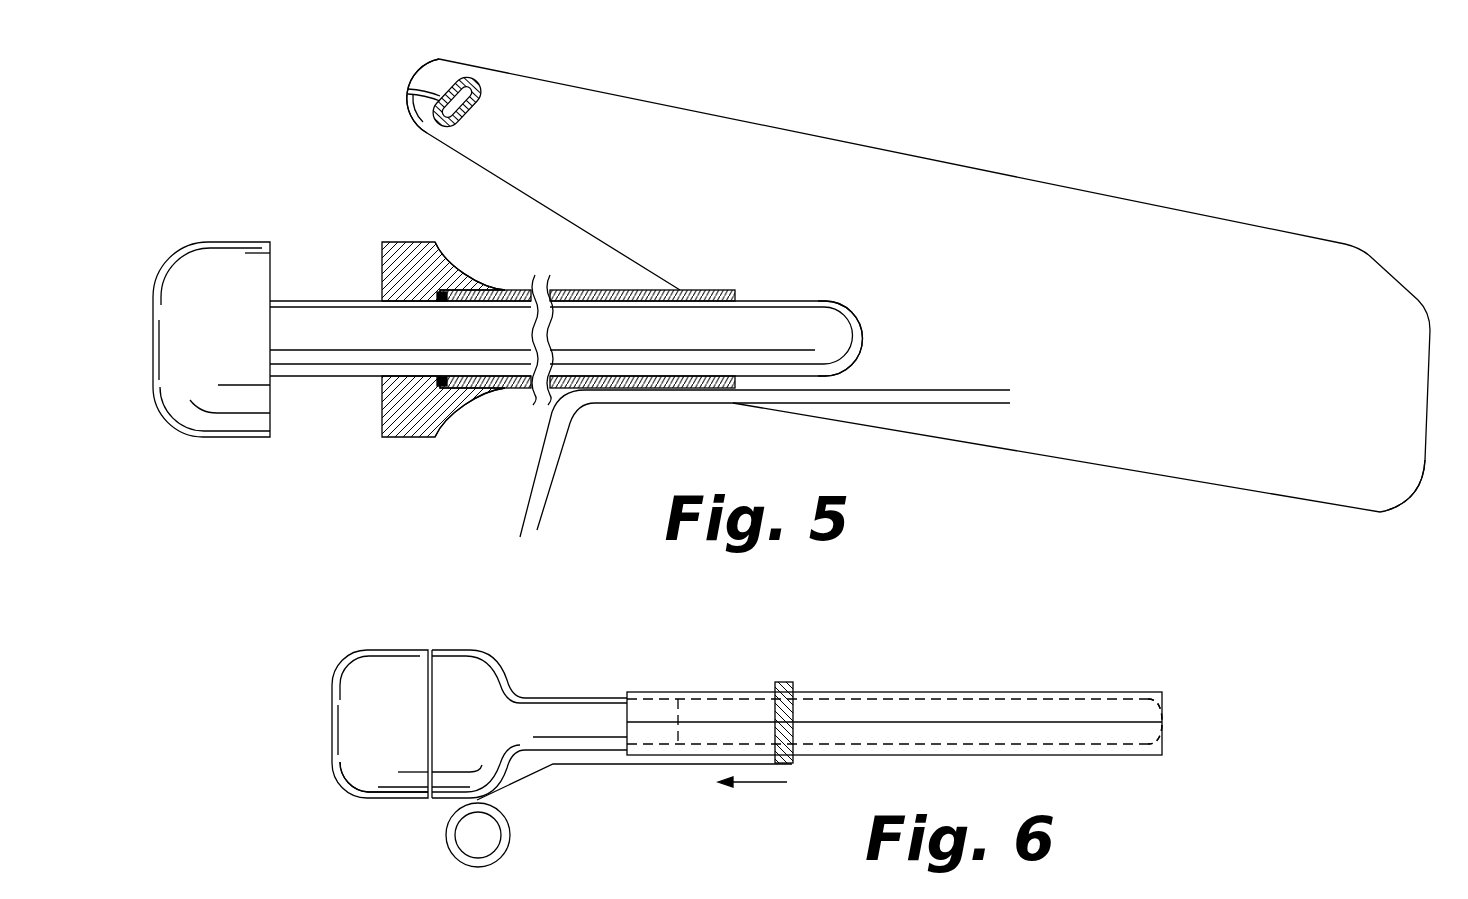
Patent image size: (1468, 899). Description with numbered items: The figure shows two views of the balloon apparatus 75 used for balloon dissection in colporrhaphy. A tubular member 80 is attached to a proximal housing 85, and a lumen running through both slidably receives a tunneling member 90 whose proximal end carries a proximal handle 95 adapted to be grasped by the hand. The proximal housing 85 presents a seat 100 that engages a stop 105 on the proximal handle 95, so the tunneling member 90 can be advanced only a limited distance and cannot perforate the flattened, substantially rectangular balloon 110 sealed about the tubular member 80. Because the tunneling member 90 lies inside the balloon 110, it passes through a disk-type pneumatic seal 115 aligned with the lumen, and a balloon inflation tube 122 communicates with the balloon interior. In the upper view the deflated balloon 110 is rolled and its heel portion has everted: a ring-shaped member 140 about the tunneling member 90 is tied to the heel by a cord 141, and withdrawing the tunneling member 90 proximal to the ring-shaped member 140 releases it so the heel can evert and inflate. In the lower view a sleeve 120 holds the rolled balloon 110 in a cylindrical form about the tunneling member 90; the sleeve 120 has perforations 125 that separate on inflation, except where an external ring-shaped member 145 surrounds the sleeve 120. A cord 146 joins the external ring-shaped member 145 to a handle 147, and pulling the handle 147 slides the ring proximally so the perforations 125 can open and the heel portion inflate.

In FIG. 6, the balloon apparatus 75 is at (395, 650).
In FIG. 5, the tubular member 80 is at (607, 290).
In FIG. 6, the tubular member 80 is at (572, 698).
In FIG. 5, the proximal housing 85 is at (468, 277).
In FIG. 6, the proximal housing 85 is at (473, 650).
In FIG. 5, the tunneling member 90 is at (805, 301).
In FIG. 6, the tunneling member 90 is at (1155, 758).
In FIG. 5, the proximal handle 95 is at (212, 437).
In FIG. 6, the proximal handle 95 is at (375, 790).
In FIG. 5, the seat 100 is at (1188, 210).
In FIG. 5, the stop 105 is at (272, 418).
In FIG. 5, the balloon 110 is at (1423, 472).
In FIG. 5, the pneumatic seal 115 is at (480, 67).
In FIG. 6, the sleeve 120 is at (923, 692).
In FIG. 5, the balloon inflation tube 122 is at (588, 422).
In FIG. 6, the perforations 125 is at (1008, 722).
In FIG. 5, the ring-shaped member 140 is at (477, 107).
In FIG. 5, the cord 141 is at (407, 112).
In FIG. 6, the external ring-shaped member 145 is at (780, 682).
In FIG. 6, the cord 146 is at (583, 765).
In FIG. 6, the handle 147 is at (502, 853).